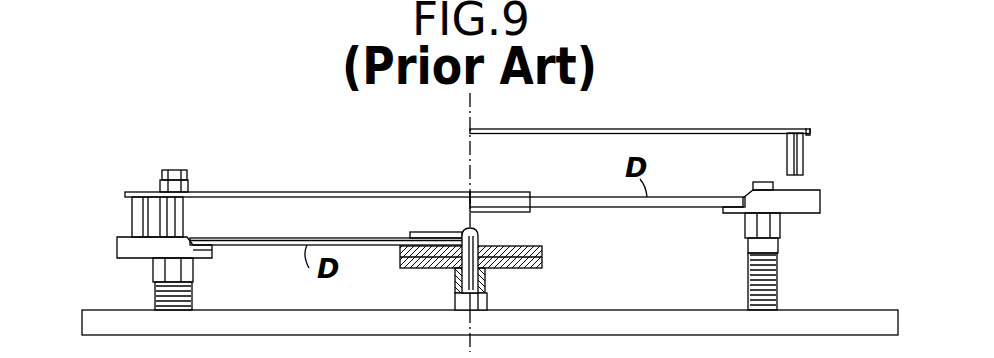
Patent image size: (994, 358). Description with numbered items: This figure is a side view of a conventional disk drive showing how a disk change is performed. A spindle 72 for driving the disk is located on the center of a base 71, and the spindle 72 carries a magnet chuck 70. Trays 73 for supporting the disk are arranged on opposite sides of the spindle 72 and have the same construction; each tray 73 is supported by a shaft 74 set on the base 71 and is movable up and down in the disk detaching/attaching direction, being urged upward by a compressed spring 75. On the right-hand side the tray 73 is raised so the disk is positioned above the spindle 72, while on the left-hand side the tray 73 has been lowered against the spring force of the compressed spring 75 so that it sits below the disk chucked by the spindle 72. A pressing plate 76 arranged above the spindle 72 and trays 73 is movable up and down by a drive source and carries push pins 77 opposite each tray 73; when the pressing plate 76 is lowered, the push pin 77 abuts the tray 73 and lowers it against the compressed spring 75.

The magnet chuck 70 is at (533, 268).
The base 71 is at (871, 319).
The spindle 72 is at (483, 246).
The tray 73 is at (131, 253).
The shaft 74 is at (182, 216).
The compressed spring 75 is at (191, 299).
The pressing plate 76 is at (369, 192).
The push pin 77 is at (132, 218).